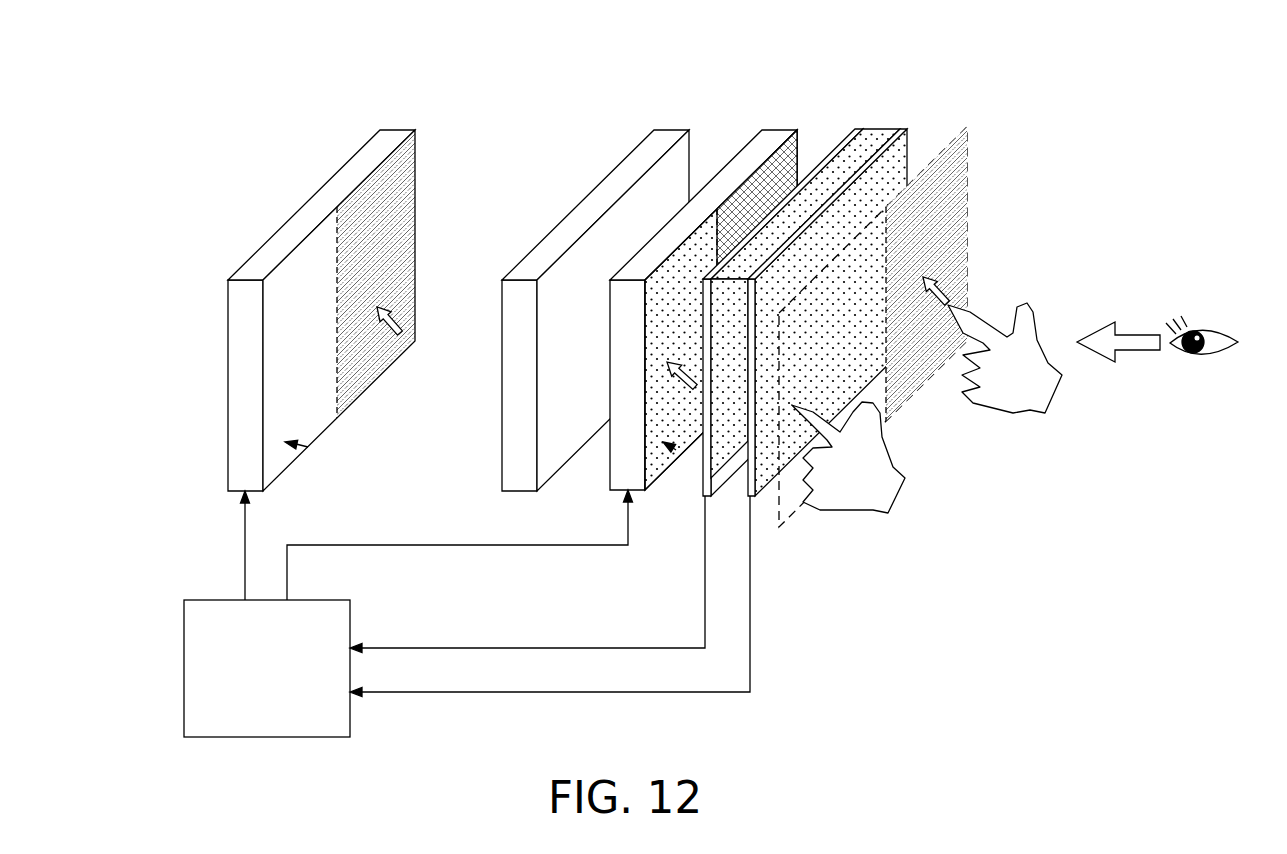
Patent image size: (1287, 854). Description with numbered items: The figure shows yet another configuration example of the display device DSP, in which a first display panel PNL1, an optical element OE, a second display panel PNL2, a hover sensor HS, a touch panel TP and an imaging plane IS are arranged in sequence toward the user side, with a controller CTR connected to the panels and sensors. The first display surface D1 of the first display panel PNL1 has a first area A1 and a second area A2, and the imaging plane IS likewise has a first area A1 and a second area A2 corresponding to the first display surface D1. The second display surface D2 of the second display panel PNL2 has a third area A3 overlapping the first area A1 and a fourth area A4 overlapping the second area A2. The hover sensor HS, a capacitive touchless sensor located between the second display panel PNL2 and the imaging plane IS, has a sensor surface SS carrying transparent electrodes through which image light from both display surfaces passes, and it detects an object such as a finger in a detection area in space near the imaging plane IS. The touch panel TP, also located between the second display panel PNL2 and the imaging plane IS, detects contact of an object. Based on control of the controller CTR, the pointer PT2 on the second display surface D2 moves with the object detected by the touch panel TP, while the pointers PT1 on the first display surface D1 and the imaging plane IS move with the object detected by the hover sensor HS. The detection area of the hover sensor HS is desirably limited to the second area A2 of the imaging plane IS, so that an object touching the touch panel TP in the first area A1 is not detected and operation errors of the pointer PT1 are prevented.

The display device DSP is at (170, 205).
The first display panel PNL1 is at (392, 136).
The optical element OE is at (664, 136).
The second display panel PNL2 is at (776, 136).
The hover sensor HS is at (858, 125).
The sensor surface SS is at (832, 182).
The touch panel TP is at (905, 125).
The imaging plane IS is at (968, 147).
The first area A1 is at (559, 333).
The second area A2 is at (652, 274).
The third area A3 is at (721, 310).
The fourth area A4 is at (757, 274).
The pointer PT1 is at (410, 345).
The pointer PT2 is at (683, 385).
The first display surface D1 is at (308, 450).
The second display surface D2 is at (672, 455).
The controller CTR is at (184, 658).